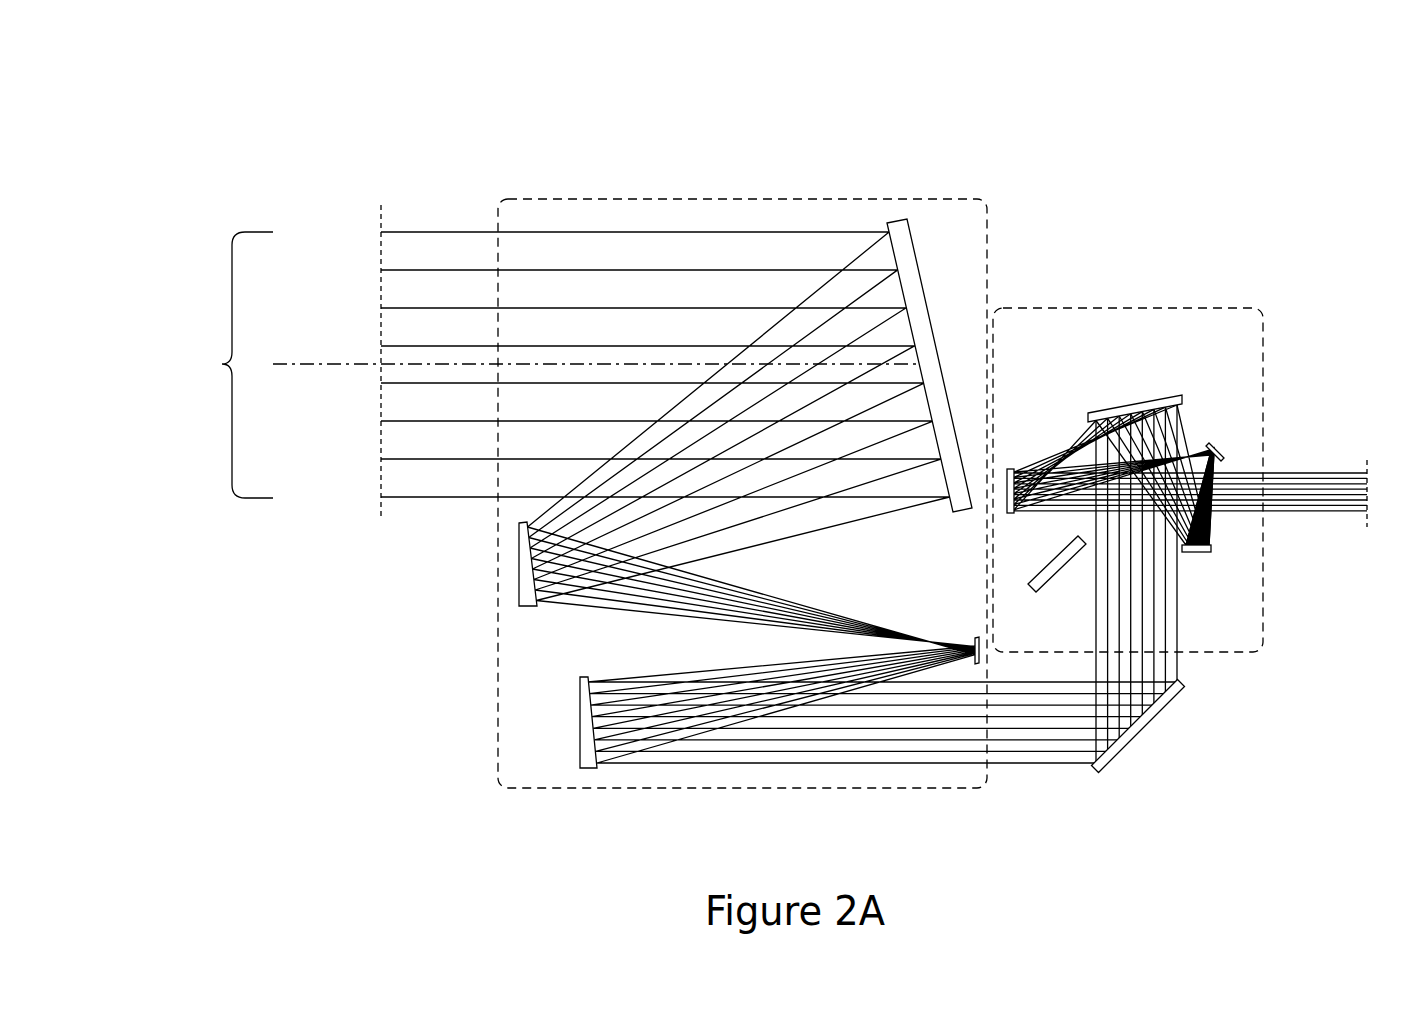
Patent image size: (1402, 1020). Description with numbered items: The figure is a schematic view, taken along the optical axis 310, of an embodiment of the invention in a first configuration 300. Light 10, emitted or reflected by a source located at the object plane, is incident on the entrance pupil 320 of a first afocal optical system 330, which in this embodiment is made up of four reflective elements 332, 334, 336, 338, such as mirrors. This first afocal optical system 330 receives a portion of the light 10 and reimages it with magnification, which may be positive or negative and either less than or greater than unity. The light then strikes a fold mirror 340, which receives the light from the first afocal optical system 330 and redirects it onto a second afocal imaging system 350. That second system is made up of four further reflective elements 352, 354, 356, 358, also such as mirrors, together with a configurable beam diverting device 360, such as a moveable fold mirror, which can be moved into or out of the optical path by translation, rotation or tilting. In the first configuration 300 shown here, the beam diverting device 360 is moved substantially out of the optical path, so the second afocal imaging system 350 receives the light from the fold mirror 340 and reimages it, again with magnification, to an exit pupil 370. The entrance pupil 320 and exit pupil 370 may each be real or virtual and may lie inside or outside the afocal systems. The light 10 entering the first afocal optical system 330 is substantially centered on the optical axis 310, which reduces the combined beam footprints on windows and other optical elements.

The first configuration 300 is at (232, 78).
The light 10 is at (222, 364).
The optical axis 310 is at (330, 370).
The entrance pupil 320 is at (381, 205).
The first afocal optical system 330 is at (553, 199).
The reflective element 332 is at (910, 237).
The reflective element 334 is at (527, 610).
The reflective element 336 is at (975, 635).
The reflective element 338 is at (583, 672).
The fold mirror 340 is at (1143, 725).
The second afocal imaging system 350 is at (1078, 307).
The reflective element 352 is at (1138, 395).
The reflective element 354 is at (1196, 557).
The reflective element 356 is at (1215, 440).
The reflective element 358 is at (1012, 465).
The configurable beam diverting device 360 is at (1060, 570).
The exit pupil 370 is at (1367, 460).